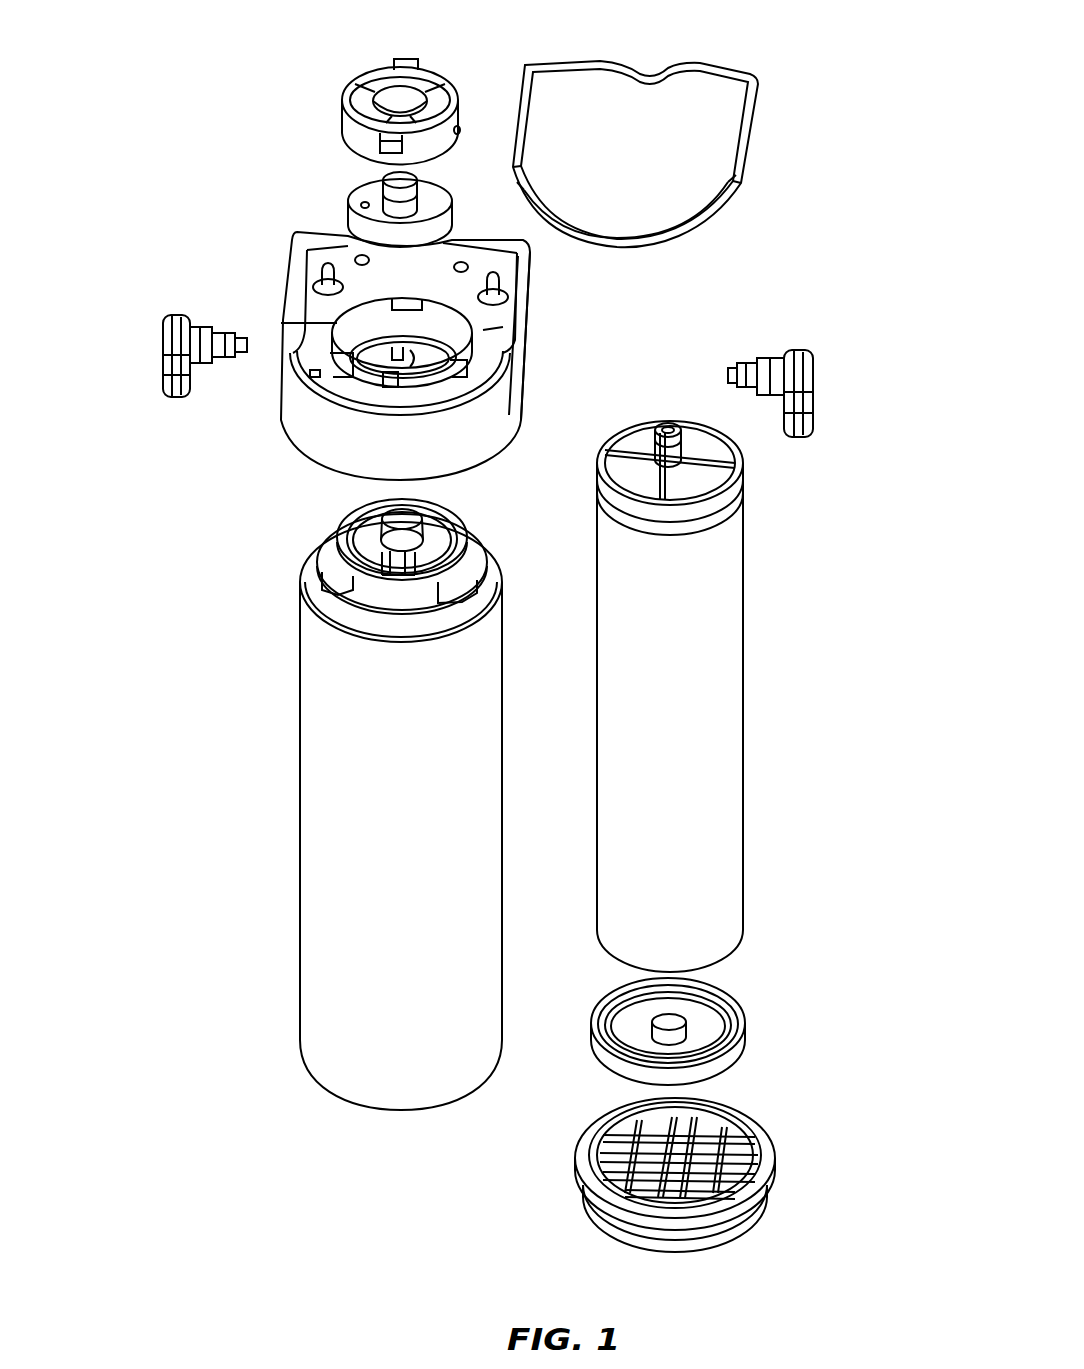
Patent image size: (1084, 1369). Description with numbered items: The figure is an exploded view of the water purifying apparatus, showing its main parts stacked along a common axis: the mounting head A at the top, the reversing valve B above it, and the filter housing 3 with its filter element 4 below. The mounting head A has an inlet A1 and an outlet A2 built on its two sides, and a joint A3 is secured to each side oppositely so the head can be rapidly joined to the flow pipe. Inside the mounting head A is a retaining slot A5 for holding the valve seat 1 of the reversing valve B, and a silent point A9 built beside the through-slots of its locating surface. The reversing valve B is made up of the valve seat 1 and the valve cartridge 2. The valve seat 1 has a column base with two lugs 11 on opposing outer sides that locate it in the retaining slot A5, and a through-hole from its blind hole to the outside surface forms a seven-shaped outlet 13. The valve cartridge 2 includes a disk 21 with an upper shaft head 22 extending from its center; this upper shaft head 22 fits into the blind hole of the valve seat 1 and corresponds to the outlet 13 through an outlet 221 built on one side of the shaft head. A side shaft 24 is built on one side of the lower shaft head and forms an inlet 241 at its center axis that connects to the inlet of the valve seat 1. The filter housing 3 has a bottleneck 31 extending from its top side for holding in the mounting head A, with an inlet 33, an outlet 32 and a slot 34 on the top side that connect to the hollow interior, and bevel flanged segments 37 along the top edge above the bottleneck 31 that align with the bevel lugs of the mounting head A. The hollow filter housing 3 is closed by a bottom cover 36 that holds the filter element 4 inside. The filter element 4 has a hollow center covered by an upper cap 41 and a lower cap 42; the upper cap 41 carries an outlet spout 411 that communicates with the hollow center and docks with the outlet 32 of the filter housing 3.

The reversing valve B is at (270, 80).
The valve seat 1 is at (350, 128).
The lugs 11 is at (404, 62).
The outlet 13 is at (460, 126).
The valve cartridge 2 is at (360, 192).
The disk 21 is at (445, 218).
The upper shaft head 22 is at (412, 185).
The outlet 221 is at (417, 196).
The side shaft 24 is at (318, 222).
The inlet 241 is at (357, 202).
The mounting head A is at (527, 302).
The inlet A1 is at (337, 338).
The outlet A2 is at (528, 357).
The joint A3 is at (165, 378).
The retaining slot A5 is at (425, 402).
The silent point A9 is at (380, 378).
The filter housing 3 is at (352, 735).
The bottleneck 31 is at (330, 607).
The outlet 32 is at (408, 540).
The inlet 33 is at (437, 505).
The slot 34 is at (427, 562).
The bevel flanged segments 37 is at (333, 553).
The filter element 4 is at (736, 655).
The upper cap 41 is at (736, 487).
The outlet spout 411 is at (668, 425).
The lower cap 42 is at (743, 1007).
The bottom cover 36 is at (760, 1177).